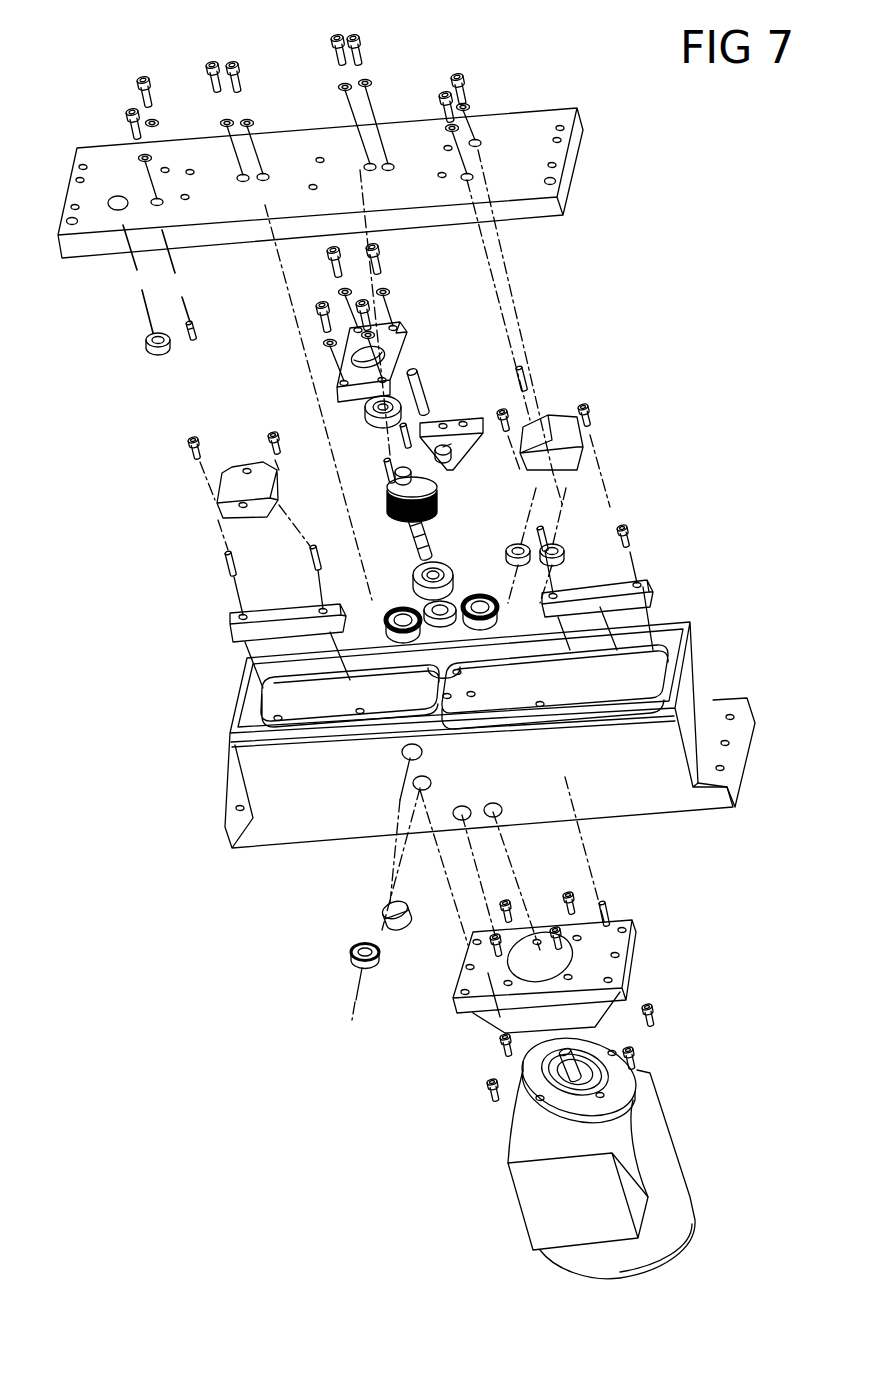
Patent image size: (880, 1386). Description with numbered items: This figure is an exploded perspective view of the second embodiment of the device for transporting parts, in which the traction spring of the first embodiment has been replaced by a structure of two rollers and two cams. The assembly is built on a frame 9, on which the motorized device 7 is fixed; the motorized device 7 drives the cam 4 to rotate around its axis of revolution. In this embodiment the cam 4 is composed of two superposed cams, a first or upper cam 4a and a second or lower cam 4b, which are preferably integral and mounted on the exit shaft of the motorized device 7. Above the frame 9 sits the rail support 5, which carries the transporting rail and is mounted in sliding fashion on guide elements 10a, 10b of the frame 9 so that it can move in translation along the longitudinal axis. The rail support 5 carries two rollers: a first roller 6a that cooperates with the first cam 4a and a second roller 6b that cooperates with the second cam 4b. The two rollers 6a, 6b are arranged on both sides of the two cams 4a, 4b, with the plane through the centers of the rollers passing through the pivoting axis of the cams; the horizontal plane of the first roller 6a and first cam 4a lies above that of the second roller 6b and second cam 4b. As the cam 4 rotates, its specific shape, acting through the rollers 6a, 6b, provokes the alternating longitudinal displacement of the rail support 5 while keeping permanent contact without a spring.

The cam 4 is at (573, 443).
The first cam 4a is at (437, 485).
The second cam 4b is at (440, 500).
The rail support 5 is at (532, 113).
The first roller 6a is at (500, 597).
The second roller 6b is at (323, 638).
The motorized device 7 is at (710, 1182).
The frame 9 is at (742, 684).
The mounting bar 10a is at (655, 586).
The mounting bar 10b is at (230, 630).